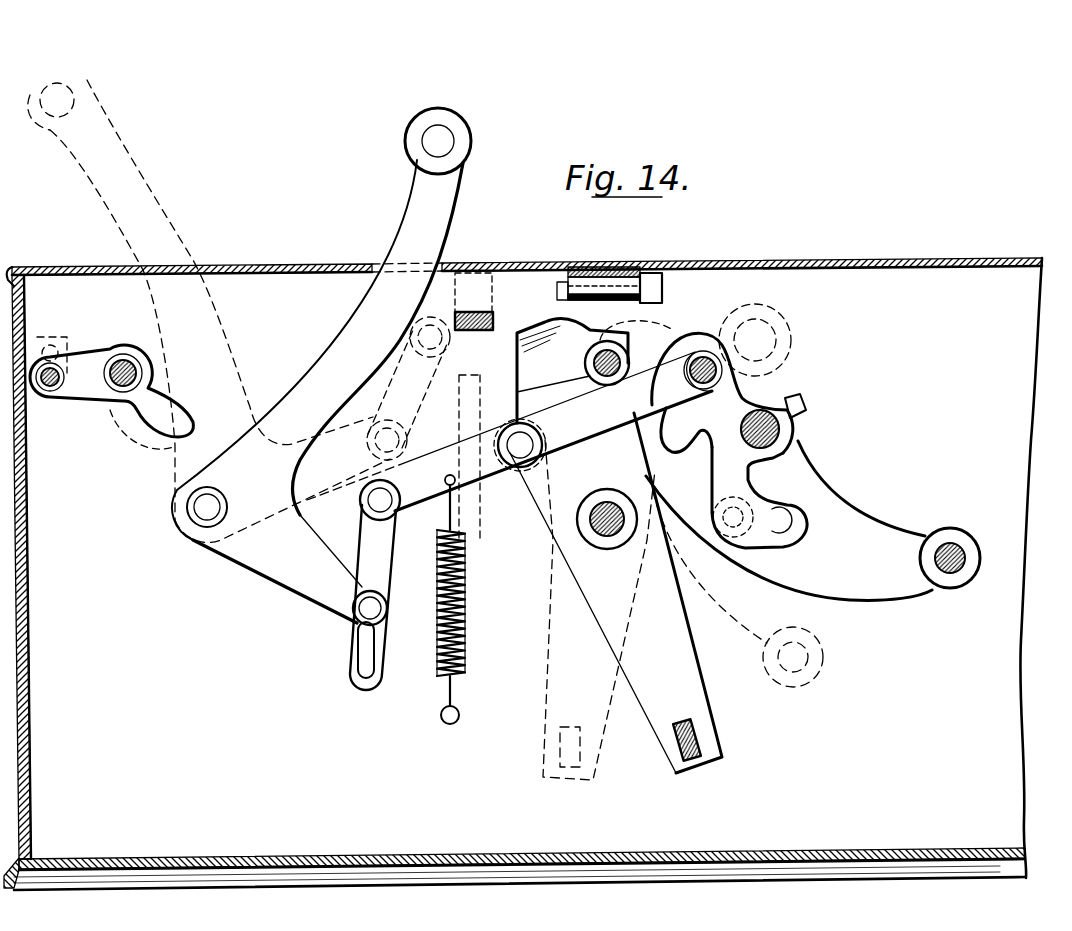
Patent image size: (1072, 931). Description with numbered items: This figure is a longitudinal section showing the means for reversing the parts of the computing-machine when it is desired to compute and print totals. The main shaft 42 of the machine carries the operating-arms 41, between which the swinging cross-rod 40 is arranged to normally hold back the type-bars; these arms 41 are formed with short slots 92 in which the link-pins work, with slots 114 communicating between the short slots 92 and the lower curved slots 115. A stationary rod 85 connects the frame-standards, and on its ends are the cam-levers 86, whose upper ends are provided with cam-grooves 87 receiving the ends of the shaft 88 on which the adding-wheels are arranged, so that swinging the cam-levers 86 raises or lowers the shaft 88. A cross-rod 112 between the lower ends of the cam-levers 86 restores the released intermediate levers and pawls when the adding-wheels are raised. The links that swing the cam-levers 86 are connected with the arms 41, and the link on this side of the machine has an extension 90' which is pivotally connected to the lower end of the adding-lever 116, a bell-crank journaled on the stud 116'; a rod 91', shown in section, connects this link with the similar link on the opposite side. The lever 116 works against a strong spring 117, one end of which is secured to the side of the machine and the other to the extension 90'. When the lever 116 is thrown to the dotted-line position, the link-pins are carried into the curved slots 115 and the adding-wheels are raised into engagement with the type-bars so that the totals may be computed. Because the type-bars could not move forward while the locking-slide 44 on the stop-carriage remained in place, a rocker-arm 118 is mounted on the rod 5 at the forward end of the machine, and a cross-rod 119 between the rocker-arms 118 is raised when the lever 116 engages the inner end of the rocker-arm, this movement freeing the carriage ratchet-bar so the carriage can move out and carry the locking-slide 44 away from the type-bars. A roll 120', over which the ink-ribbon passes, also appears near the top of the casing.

The rod 5 is at (136, 362).
The cross-rod 40 is at (965, 556).
The operating-arm 41 is at (889, 531).
The main shaft 42 is at (781, 433).
The locking-slide 44 is at (477, 309).
The stationary rod 85 is at (590, 521).
The cam-lever 86 is at (616, 596).
The cam-groove 87 is at (595, 370).
The shaft 88 is at (624, 359).
The extension 90' is at (509, 446).
The rod 91' is at (715, 335).
The short slot 92 is at (662, 410).
The cross-rod 112 is at (694, 737).
The slot 114 is at (676, 427).
The lower curved slot 115 is at (788, 527).
The adding-lever 116 is at (249, 351).
The stud 116' is at (197, 531).
The spring 117 is at (468, 611).
The rocker-arm 118 is at (158, 400).
The cross-rod 119 is at (56, 372).
The roll 120' is at (609, 265).